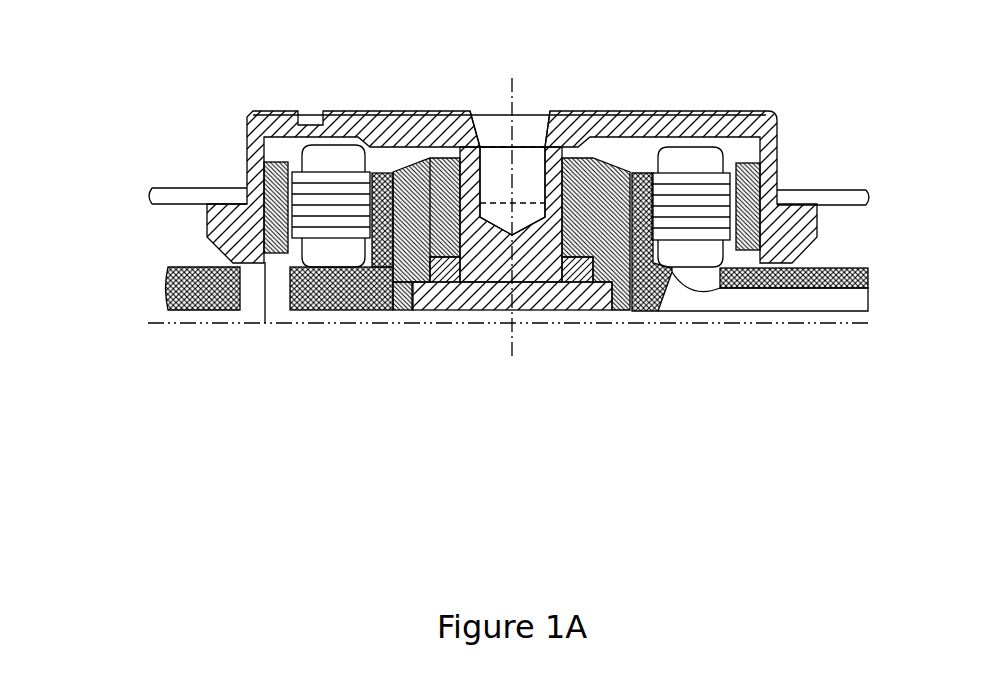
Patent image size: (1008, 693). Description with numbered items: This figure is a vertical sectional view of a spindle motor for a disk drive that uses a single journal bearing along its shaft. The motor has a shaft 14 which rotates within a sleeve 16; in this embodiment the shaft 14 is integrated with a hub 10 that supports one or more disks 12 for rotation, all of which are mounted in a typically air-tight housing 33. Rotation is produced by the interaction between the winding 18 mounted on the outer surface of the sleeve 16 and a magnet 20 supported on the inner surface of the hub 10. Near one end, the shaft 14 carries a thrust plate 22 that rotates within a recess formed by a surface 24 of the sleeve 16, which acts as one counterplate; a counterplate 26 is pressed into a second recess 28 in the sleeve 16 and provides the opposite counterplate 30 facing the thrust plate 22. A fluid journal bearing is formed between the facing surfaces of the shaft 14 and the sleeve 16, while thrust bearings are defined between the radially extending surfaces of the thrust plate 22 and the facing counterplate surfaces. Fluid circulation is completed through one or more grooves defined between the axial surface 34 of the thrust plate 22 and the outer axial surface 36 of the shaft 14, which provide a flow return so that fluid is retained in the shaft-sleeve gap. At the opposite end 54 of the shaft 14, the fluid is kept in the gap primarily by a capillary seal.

The hub 10 is at (267, 110).
The disks 12 is at (157, 203).
The shaft 14 is at (472, 147).
The sleeve 16 is at (662, 110).
The winding 18 is at (283, 325).
The magnet 20 is at (260, 177).
The thrust plate 22 is at (398, 312).
The surface of the sleeve 24 is at (445, 230).
The counterplate 26 is at (570, 310).
The second recess 28 is at (660, 302).
The opposite counterplate 30 is at (445, 312).
The housing 33 is at (185, 310).
The axial surface of the thrust plate 34 is at (597, 172).
The outer axial surface of the shaft 36 is at (498, 312).
The opposite end of the shaft 54 is at (543, 167).